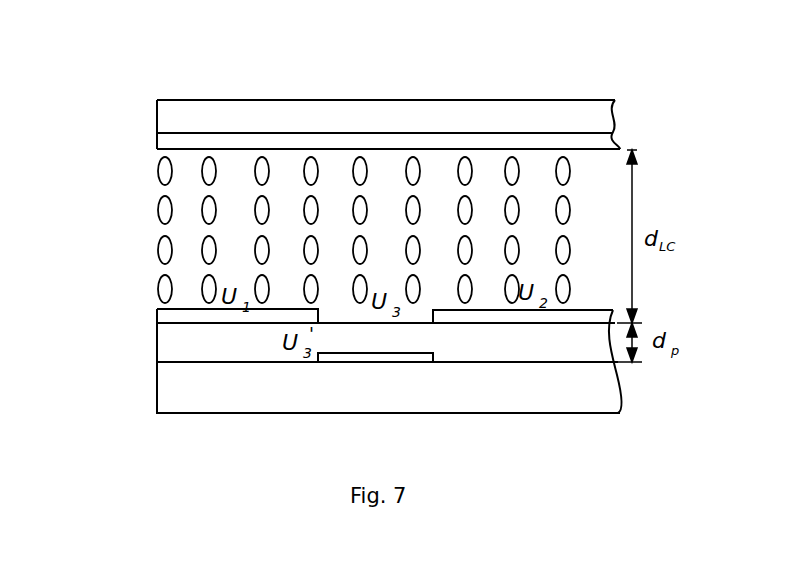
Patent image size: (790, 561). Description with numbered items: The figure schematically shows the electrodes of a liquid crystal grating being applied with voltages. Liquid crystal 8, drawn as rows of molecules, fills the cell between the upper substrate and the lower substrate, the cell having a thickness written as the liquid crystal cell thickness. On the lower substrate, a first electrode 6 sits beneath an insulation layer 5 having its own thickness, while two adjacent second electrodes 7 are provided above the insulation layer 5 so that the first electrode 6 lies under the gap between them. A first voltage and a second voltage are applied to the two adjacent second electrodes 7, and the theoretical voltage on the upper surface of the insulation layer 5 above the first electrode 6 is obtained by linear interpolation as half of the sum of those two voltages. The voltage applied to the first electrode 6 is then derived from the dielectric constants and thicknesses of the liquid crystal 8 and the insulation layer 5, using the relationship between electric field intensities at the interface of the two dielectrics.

The insulation layer 5 is at (193, 347).
The first electrodes 6 is at (373, 357).
The second electrodes 7 is at (185, 320).
The liquid crystal 8 is at (175, 208).